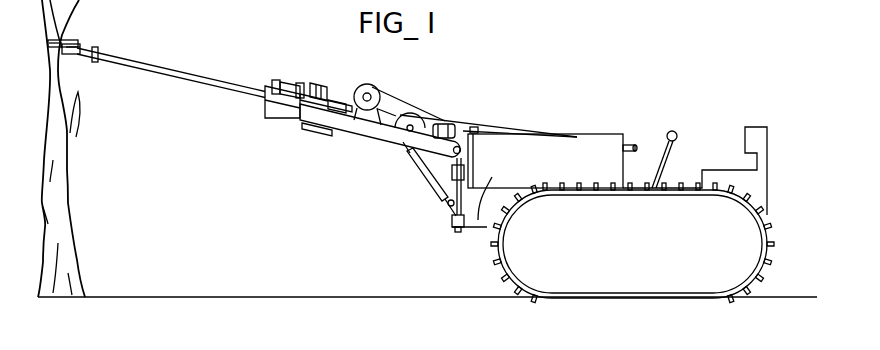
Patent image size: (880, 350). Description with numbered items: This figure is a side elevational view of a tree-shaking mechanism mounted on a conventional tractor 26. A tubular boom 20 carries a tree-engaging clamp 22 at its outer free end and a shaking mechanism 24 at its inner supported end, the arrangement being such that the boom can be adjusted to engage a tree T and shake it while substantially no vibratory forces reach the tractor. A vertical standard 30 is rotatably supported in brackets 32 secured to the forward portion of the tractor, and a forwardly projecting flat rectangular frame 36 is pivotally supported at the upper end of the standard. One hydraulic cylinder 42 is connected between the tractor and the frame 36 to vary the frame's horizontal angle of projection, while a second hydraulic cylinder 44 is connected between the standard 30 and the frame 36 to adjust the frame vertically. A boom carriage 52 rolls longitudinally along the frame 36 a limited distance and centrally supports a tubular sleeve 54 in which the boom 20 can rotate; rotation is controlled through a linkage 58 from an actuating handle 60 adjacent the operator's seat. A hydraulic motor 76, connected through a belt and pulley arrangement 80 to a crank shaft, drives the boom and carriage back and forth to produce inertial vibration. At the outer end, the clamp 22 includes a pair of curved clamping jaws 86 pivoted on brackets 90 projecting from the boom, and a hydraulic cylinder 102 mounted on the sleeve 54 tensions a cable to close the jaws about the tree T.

The tree T is at (62, 220).
The boom 20 is at (208, 85).
The tree-engaging clamp 22 is at (82, 35).
The shaking mechanism 24 is at (411, 93).
The tractor 26 is at (637, 255).
The vertical standard 30 is at (452, 218).
The brackets 32 is at (465, 173).
The frame 36 is at (398, 137).
The hydraulic cylinder 42 is at (452, 124).
The second hydraulic cylinder 44 is at (432, 190).
The boom carriage 52 is at (272, 108).
The tubular sleeve 54 is at (288, 93).
The linkage 58 is at (330, 91).
The actuating handle 60 is at (638, 147).
The hydraulic motor 76 is at (367, 84).
The belt and pulley arrangement 80 is at (418, 112).
The clamping jaws 86 is at (67, 48).
The brackets 90 is at (80, 58).
The hydraulic cylinder 102 is at (275, 82).